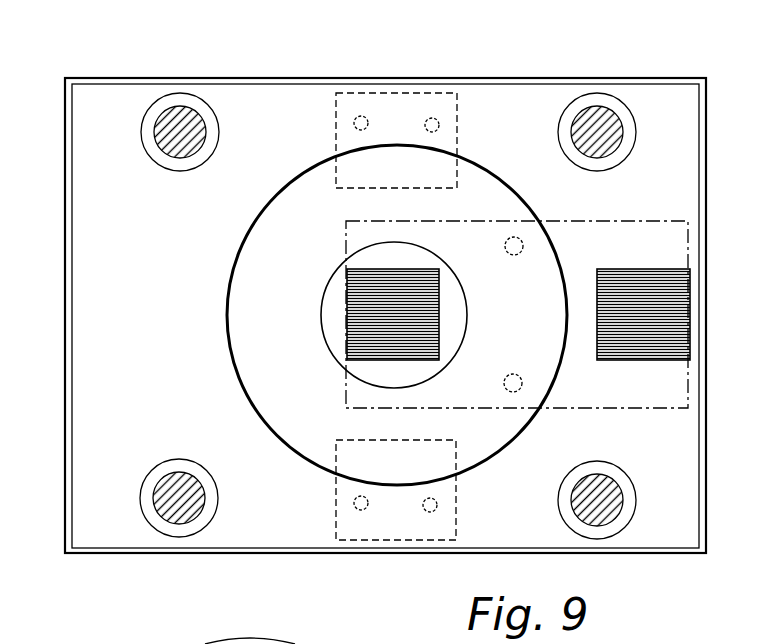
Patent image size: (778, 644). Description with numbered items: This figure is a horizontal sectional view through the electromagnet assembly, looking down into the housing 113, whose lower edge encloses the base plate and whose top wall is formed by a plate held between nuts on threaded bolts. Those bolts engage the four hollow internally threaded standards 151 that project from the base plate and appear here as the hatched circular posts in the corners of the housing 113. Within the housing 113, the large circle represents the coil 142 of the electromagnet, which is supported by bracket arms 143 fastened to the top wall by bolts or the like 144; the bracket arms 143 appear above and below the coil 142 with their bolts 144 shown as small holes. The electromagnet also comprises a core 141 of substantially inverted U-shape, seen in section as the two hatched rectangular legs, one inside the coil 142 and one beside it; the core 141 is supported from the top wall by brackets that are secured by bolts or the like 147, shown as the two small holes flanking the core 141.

The housing 113 is at (66, 228).
The core 141 is at (690, 289).
The coil 142 is at (243, 304).
The bracket arms 143 is at (432, 99).
The bolts 144 is at (361, 116).
The bolts 147 is at (520, 241).
The hollow internally threaded standards 151 is at (177, 110).